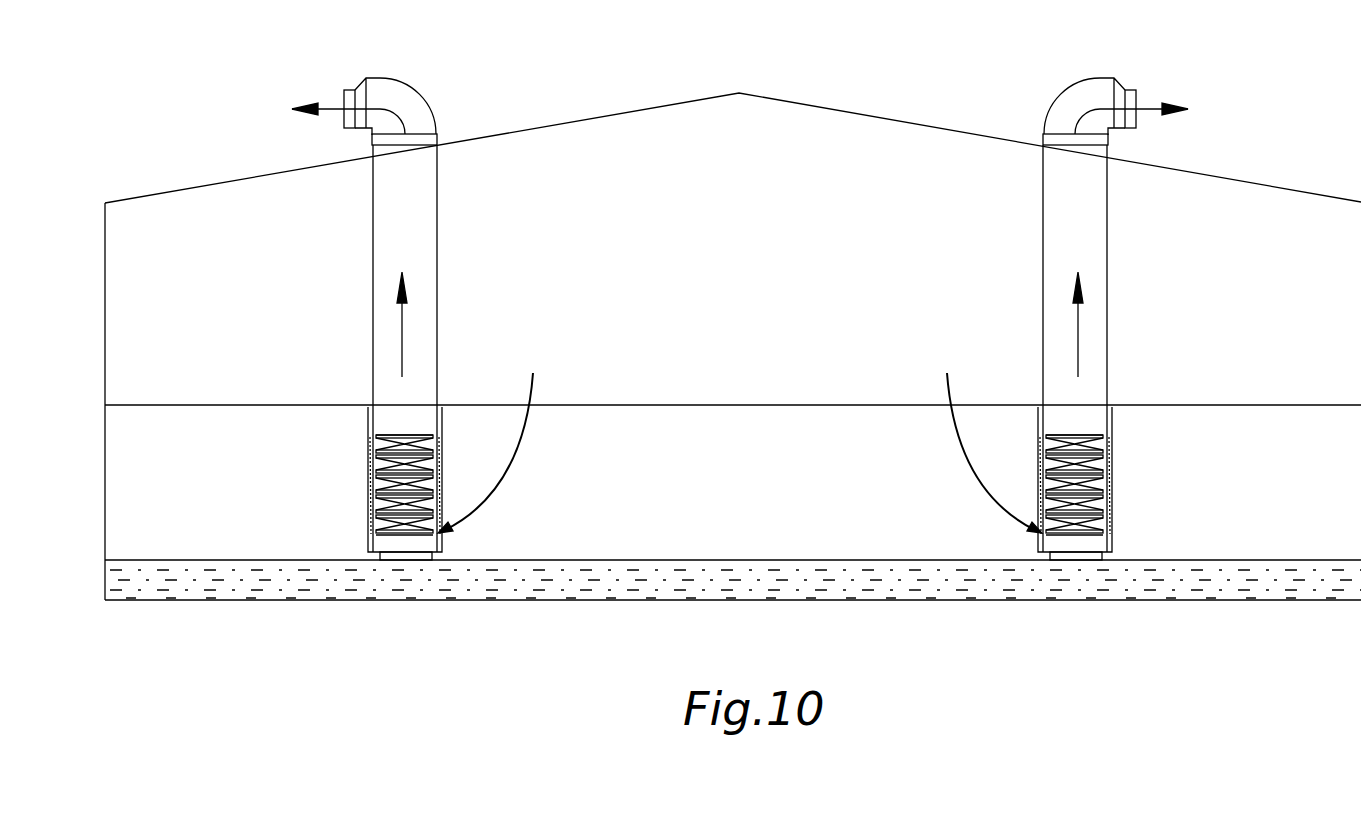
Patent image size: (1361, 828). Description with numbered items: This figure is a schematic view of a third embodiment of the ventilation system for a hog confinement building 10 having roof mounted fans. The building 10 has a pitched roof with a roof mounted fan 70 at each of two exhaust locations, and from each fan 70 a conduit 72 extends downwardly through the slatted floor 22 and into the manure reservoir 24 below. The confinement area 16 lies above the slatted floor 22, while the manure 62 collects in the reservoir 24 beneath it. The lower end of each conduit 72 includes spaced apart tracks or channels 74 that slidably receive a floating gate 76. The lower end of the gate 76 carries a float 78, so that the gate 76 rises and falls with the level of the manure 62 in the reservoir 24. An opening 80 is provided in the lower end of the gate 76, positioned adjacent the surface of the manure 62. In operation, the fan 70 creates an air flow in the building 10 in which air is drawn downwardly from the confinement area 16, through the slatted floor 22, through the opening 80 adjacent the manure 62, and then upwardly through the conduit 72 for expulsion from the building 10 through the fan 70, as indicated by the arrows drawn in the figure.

The hog confinement building 10 is at (1288, 80).
The confinement area 16 is at (855, 296).
The slatted floor 22 is at (742, 405).
The manure reservoir 24 is at (643, 430).
The manure 62 is at (708, 570).
The roof mounted fan 70 is at (398, 88).
The conduit 72 is at (425, 272).
The tracks or channels 74 is at (370, 470).
The floating gate 76 is at (400, 433).
The float 78 is at (435, 558).
The opening 80 is at (388, 543).